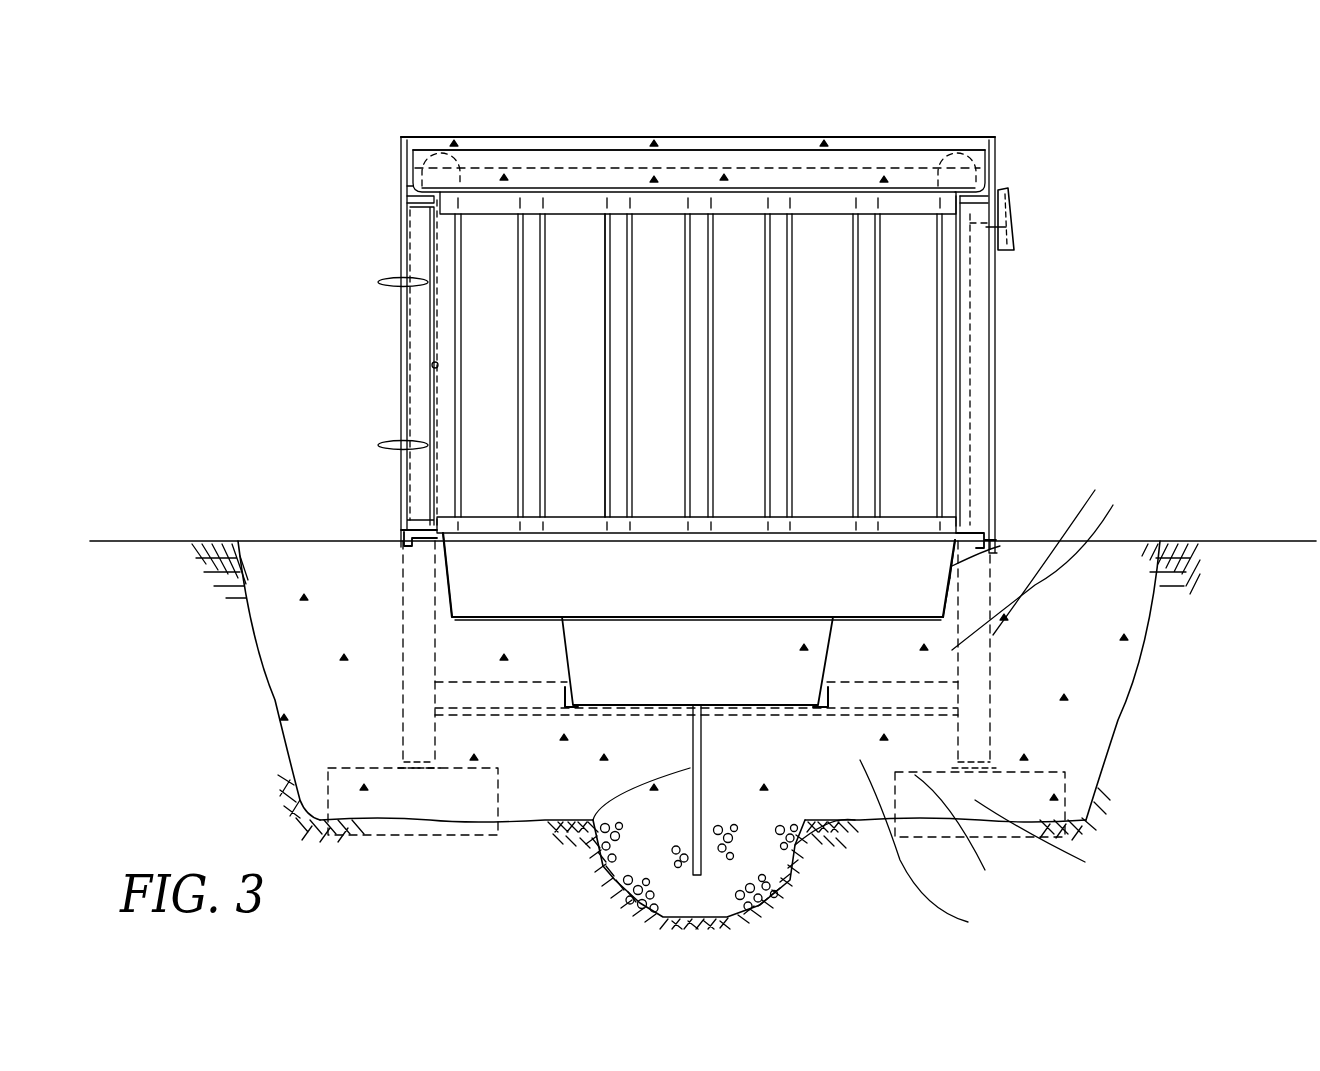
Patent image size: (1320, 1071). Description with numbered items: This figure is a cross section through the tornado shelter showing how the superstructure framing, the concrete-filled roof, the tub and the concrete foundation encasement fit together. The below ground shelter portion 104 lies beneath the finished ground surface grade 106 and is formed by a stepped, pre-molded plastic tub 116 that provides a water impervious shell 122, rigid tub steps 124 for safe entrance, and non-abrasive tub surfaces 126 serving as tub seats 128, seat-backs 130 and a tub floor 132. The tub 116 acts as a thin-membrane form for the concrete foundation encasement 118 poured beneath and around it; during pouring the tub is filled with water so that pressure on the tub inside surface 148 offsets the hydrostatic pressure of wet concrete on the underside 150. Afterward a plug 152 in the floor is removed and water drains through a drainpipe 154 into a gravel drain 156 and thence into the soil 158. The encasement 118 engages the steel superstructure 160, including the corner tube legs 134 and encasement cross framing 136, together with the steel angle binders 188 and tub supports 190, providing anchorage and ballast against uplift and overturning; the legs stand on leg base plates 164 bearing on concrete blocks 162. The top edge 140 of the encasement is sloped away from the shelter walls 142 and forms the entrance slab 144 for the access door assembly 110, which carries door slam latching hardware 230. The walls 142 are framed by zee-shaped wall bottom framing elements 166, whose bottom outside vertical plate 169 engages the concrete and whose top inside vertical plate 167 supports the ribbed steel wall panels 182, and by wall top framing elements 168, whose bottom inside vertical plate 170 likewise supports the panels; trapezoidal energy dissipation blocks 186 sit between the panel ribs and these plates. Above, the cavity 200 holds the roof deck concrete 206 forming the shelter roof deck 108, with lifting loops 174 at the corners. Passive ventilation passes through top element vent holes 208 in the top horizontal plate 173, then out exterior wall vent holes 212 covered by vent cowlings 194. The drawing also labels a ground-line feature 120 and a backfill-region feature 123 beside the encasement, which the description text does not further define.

The below ground shelter portion 104 is at (252, 685).
The finished ground surface grade 106 is at (1168, 548).
The shelter roof deck 108 is at (561, 137).
The access door assembly 110 is at (400, 357).
The tub 116 is at (952, 568).
The concrete foundation encasement 118 is at (993, 635).
The ground surface 120 is at (1272, 541).
The water impervious shell 122 is at (945, 578).
The backfill material 123 is at (952, 566).
The tub steps 124 is at (537, 617).
The tub surfaces 126 is at (770, 705).
The tub seats 128 is at (850, 605).
The seat-backs 130 is at (944, 548).
The tub floor 132 is at (612, 705).
The corner tube legs 134 is at (413, 603).
The encasement cross framing 136 is at (920, 775).
The top edge of concrete foundation encasement 140 is at (1166, 541).
The shelter walls 142 is at (998, 378).
The entrance slab 144 is at (250, 541).
The tub inside surface 148 is at (447, 552).
The underside of tub 150 is at (443, 570).
The plug 152 is at (697, 720).
The drainpipe 154 is at (690, 768).
The gravel drain 156 is at (640, 855).
The soil 158 is at (795, 845).
The steel superstructure 160 is at (952, 650).
The concrete blocks 162 is at (1050, 805).
The leg base plates 164 is at (990, 768).
The wall bottom framing elements 166 is at (417, 513).
The top inside vertical plate 167 is at (646, 517).
The wall top framing elements 168 is at (432, 138).
The bottom outside vertical plate 169 is at (997, 540).
The bottom inside vertical plate 170 is at (568, 216).
The top horizontal plate 173 is at (733, 216).
The lifting loops 174 is at (470, 166).
The ribbed steel wall panels 182 is at (626, 366).
The energy dissipation blocks 186 is at (975, 220).
The steel angle binders 188 is at (975, 800).
The tub supports 190 is at (860, 760).
The vent cowlings 194 is at (1016, 216).
The cavity 200 is at (742, 160).
The roof deck concrete 206 is at (642, 148).
The top element vent holes 208 is at (410, 196).
The exterior wall vent holes 212 is at (1000, 232).
The door slam latching hardware 230 is at (408, 283).